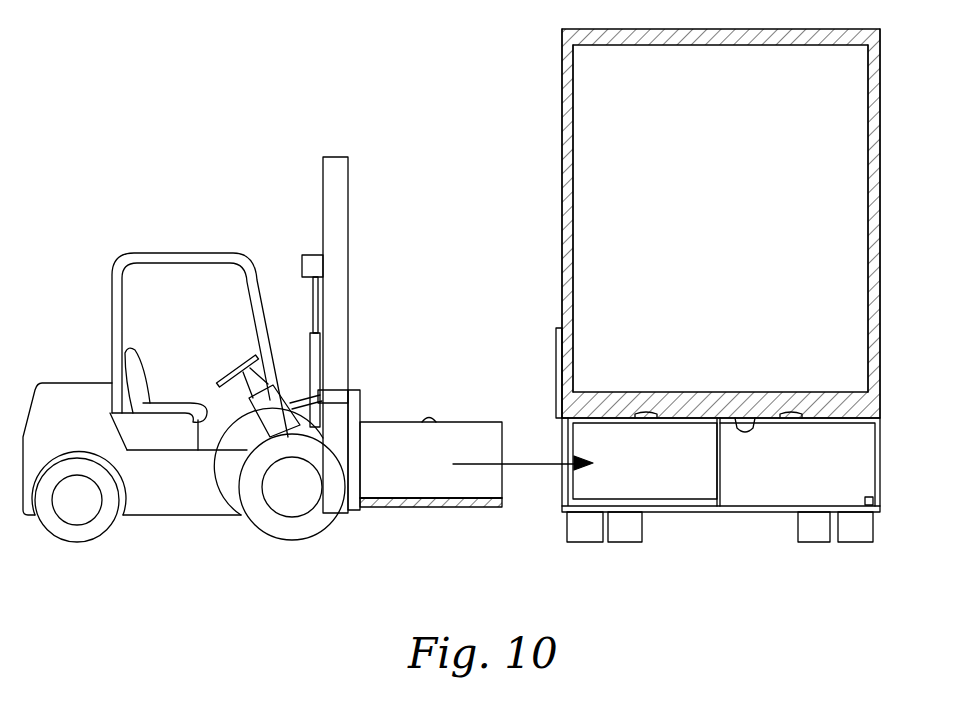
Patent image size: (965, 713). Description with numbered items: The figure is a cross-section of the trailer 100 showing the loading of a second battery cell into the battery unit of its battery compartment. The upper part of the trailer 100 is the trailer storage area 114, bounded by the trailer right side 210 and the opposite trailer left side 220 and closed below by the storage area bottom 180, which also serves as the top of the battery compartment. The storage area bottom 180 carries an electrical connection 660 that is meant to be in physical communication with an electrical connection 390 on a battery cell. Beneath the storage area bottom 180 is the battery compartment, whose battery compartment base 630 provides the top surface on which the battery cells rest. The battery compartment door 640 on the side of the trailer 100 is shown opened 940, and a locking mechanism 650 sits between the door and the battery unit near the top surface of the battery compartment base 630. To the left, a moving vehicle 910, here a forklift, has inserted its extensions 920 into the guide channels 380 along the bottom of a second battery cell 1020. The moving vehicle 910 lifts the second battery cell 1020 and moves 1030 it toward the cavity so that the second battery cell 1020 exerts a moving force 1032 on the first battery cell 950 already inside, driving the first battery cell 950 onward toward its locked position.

The trailer 100 is at (710, 291).
The trailer storage area 114 is at (727, 180).
The trailer right side 210 is at (882, 215).
The trailer left side 220 is at (560, 215).
The opened 940 is at (556, 362).
The electrical connection 660 is at (648, 410).
The storage area bottom 180 is at (763, 418).
The battery compartment door 640 is at (882, 445).
The locking mechanism 650 is at (880, 500).
The battery compartment base 630 is at (746, 512).
The first battery cell 950 is at (645, 461).
The moving vehicle 910 is at (205, 247).
The electrical connection 390 is at (430, 418).
The second battery cell 1020 is at (478, 440).
The extension 920 is at (400, 508).
The guide channel 380 is at (450, 508).
The moves 1030 is at (523, 513).
The moving force 1032 is at (533, 468).